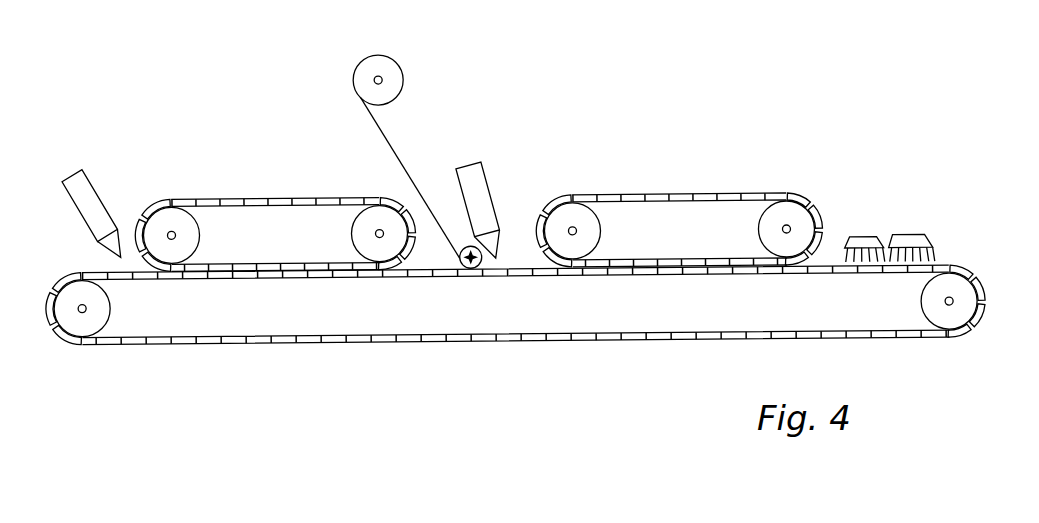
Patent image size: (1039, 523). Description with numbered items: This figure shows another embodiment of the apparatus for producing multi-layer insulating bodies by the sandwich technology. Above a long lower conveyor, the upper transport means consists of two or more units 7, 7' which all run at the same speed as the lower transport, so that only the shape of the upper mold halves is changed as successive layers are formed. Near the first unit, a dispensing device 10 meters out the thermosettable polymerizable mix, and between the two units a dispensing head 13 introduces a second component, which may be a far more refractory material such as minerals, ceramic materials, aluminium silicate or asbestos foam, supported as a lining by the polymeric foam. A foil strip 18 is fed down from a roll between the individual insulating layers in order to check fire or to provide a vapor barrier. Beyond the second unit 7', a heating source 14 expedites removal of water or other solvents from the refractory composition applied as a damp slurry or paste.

The transport means 7 is at (275, 217).
The transport means unit 7' is at (679, 202).
The dispensing device 10 is at (93, 191).
The dispensing head 13 is at (480, 182).
The heating source 14 is at (868, 238).
The foil strip 18 is at (389, 138).